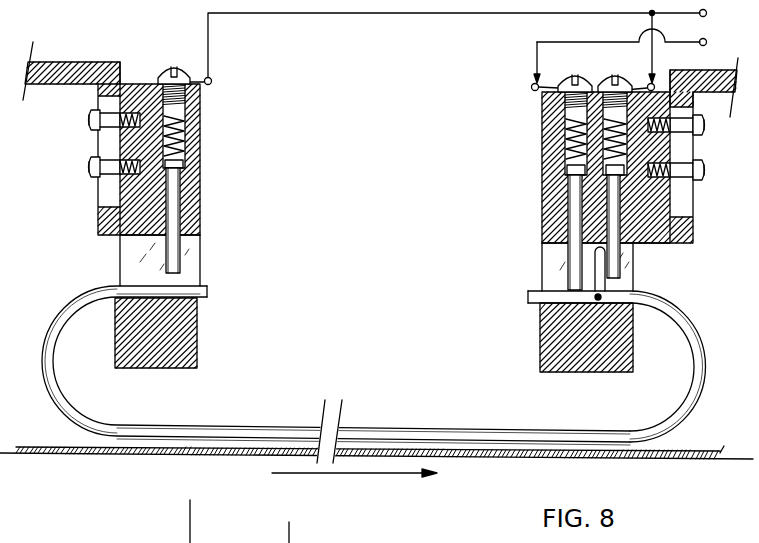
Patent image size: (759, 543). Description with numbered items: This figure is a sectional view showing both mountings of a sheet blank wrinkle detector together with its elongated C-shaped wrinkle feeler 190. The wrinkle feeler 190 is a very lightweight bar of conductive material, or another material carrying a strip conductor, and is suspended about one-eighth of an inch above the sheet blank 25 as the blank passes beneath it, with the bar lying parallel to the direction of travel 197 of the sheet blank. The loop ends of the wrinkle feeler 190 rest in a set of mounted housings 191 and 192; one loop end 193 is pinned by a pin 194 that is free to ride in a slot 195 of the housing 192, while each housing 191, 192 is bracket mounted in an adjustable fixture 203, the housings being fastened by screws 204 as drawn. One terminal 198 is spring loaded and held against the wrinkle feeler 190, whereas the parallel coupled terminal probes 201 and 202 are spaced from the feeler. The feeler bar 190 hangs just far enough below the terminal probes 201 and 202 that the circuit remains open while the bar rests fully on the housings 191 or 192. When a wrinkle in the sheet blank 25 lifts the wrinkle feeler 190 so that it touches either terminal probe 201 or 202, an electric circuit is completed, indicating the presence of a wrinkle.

The sheet blank 25 is at (120, 455).
The wrinkle feeler 190 is at (440, 426).
The mounted housing 191 is at (200, 203).
The mounted housing 192 is at (541, 154).
The loop end 193 is at (696, 318).
The pin 194 is at (601, 299).
The slot 195 is at (597, 267).
The direction of travel 197 is at (346, 475).
The terminal 198 is at (562, 208).
The terminal probe 201 is at (180, 263).
The terminal probe 202 is at (622, 248).
The adjustable fixture 203 is at (690, 157).
The mounting screws 204 is at (98, 146).